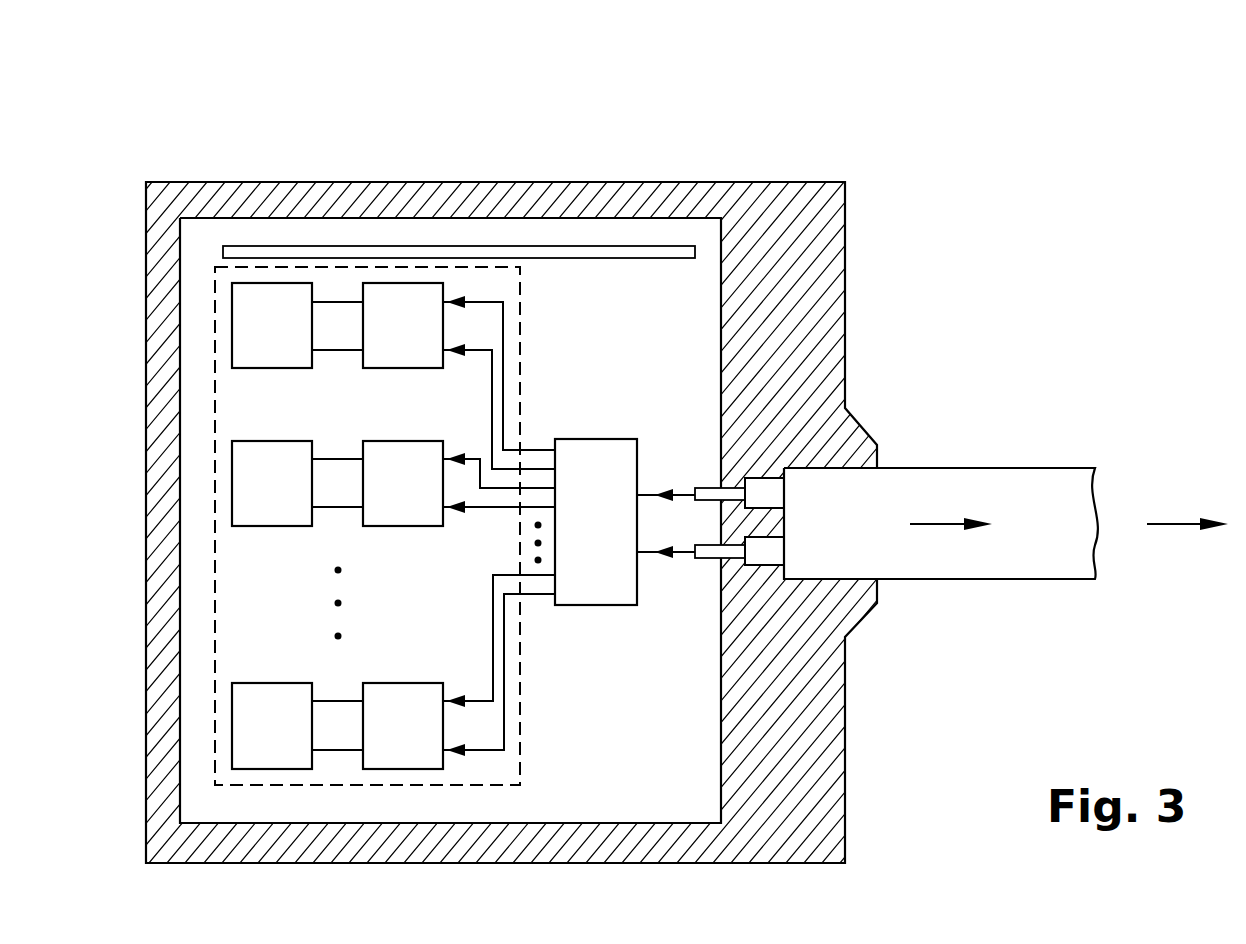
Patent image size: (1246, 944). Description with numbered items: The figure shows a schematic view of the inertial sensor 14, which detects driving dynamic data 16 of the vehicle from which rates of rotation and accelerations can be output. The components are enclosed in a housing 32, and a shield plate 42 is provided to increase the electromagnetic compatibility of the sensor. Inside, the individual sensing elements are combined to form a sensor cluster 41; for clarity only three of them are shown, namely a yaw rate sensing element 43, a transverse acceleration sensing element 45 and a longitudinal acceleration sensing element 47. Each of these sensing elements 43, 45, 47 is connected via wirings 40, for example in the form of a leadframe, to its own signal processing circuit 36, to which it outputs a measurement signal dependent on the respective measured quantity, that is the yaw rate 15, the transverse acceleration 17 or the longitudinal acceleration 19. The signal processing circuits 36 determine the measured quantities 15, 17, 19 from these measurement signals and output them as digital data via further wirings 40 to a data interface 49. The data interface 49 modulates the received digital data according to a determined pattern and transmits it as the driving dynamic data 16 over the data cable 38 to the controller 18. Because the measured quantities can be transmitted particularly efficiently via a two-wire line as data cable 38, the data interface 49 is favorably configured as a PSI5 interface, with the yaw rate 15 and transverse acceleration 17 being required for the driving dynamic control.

The inertial sensor 14 is at (623, 446).
The housing 32 is at (452, 198).
The shield plate 42 is at (352, 250).
The sensor cluster 41 is at (520, 722).
The yaw rate sensing element 43 is at (272, 348).
The transverse acceleration sensing element 45 is at (272, 505).
The longitudinal acceleration sensing element 47 is at (272, 700).
The signal processing circuit 36 is at (400, 350).
The wirings 40 is at (348, 302).
The yaw rate 15 is at (462, 348).
The transverse acceleration 17 is at (466, 505).
The longitudinal acceleration 19 is at (466, 748).
The data interface 49 is at (613, 458).
The driving dynamic data 16 is at (668, 550).
The data cable 38 is at (1012, 487).
The controller 18 is at (1178, 527).